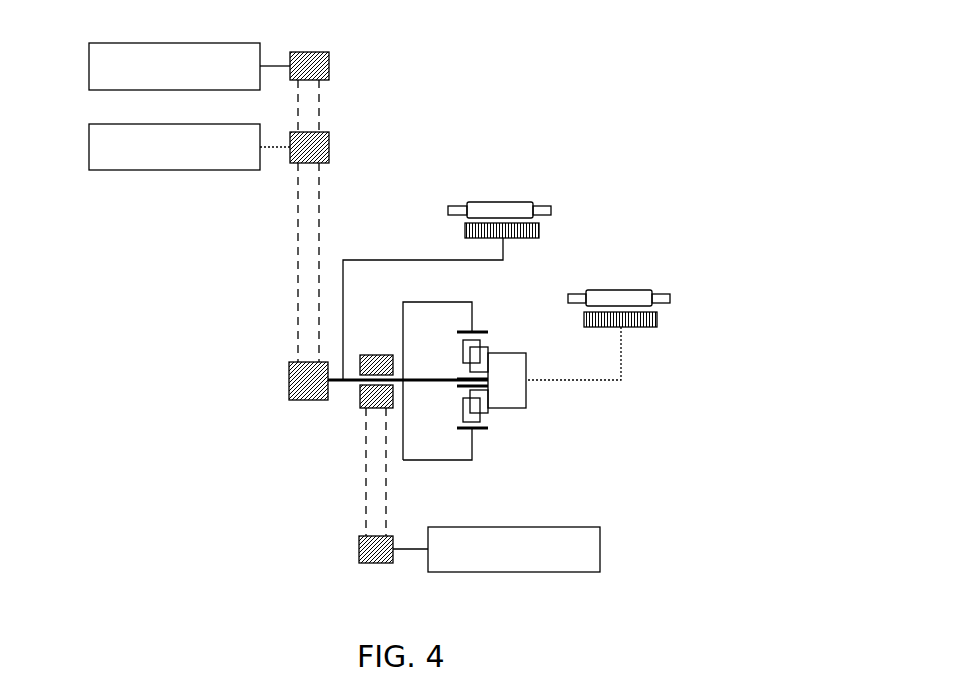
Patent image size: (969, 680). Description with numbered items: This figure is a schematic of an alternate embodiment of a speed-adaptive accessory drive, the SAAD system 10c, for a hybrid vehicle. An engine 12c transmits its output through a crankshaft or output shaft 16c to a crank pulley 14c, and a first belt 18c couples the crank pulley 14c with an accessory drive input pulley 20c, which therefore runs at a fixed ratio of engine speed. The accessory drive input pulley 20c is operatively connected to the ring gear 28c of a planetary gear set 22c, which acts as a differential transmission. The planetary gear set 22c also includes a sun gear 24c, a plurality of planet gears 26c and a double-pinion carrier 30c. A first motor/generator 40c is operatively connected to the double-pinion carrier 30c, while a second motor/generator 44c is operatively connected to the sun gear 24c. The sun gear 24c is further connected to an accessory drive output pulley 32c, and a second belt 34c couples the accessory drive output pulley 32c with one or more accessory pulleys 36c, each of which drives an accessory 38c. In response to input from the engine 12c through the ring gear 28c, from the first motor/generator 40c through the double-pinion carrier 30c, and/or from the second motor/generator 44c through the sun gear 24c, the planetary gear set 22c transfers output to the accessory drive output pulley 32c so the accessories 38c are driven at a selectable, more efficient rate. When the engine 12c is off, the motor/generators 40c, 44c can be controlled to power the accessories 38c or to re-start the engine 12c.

The SAAD system 10c is at (626, 88).
The engine 12c is at (565, 574).
The crank pulley 14c is at (370, 565).
The output shaft 16c is at (410, 552).
The first belt 18c is at (362, 478).
The accessory drive input pulley 20c is at (366, 410).
The planetary gear set 22c is at (556, 427).
The sun gear 24c is at (455, 375).
The planet gears 26c is at (491, 346).
The ring gear 28c is at (474, 330).
The double-pinion carrier 30c is at (527, 392).
The accessory drive output pulley 32c is at (290, 372).
The second belt 34c is at (321, 236).
The accessory pulleys 36c is at (321, 52).
The accessories 38c is at (100, 43).
The first motor/generator 40c is at (642, 286).
The second motor/generator 44c is at (519, 198).